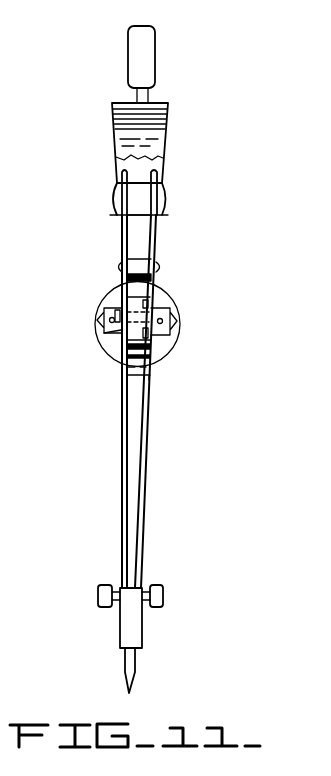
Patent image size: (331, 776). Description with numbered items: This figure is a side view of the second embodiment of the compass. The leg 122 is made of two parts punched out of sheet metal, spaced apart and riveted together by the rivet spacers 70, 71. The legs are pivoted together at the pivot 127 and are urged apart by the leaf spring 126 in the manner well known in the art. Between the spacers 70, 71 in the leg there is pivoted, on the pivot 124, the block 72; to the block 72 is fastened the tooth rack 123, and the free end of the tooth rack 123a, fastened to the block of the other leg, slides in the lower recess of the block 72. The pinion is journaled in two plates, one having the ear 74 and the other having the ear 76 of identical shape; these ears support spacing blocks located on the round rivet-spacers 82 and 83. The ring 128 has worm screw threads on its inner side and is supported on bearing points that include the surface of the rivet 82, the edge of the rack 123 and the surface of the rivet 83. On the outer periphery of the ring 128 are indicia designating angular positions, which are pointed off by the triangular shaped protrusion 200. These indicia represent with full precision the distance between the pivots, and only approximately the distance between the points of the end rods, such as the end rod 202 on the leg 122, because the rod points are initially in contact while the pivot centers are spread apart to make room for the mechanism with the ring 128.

The leaf spring 126 is at (167, 146).
The pivot 127 is at (165, 198).
The rivet spacer 70 is at (134, 268).
The ring 128 is at (163, 295).
The pivot 124 is at (115, 310).
The tooth rack 123 is at (150, 301).
The triangular shaped protrusion 200 is at (100, 316).
The round rivet-spacer 83 is at (178, 321).
The round rivet-spacer 82 is at (109, 322).
The ear 76 is at (172, 338).
The ear 74 is at (112, 330).
The tooth rack 123a is at (160, 352).
The block 72 is at (108, 364).
The rivet spacer 71 is at (157, 366).
The leg 122 is at (120, 418).
The end rod 202 is at (134, 660).